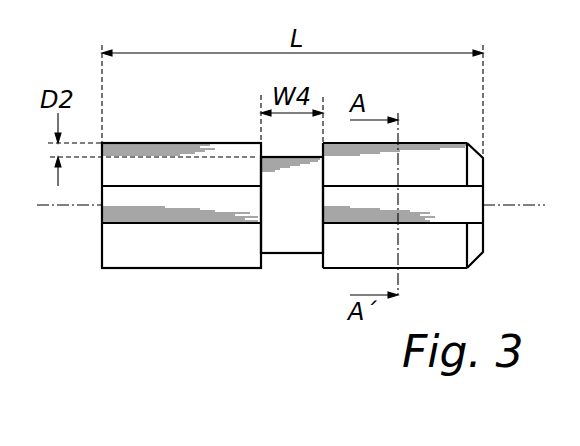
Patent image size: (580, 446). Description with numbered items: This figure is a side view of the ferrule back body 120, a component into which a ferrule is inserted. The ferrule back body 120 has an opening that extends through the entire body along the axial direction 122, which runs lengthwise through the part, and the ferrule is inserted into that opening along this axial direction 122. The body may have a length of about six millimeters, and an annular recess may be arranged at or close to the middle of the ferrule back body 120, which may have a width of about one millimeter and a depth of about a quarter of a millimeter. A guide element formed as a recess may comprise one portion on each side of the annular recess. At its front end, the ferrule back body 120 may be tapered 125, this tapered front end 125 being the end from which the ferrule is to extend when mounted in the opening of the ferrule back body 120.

The ferrule back body 120 is at (326, 264).
The axial direction 122 is at (508, 207).
The tapered front end 125 is at (472, 176).